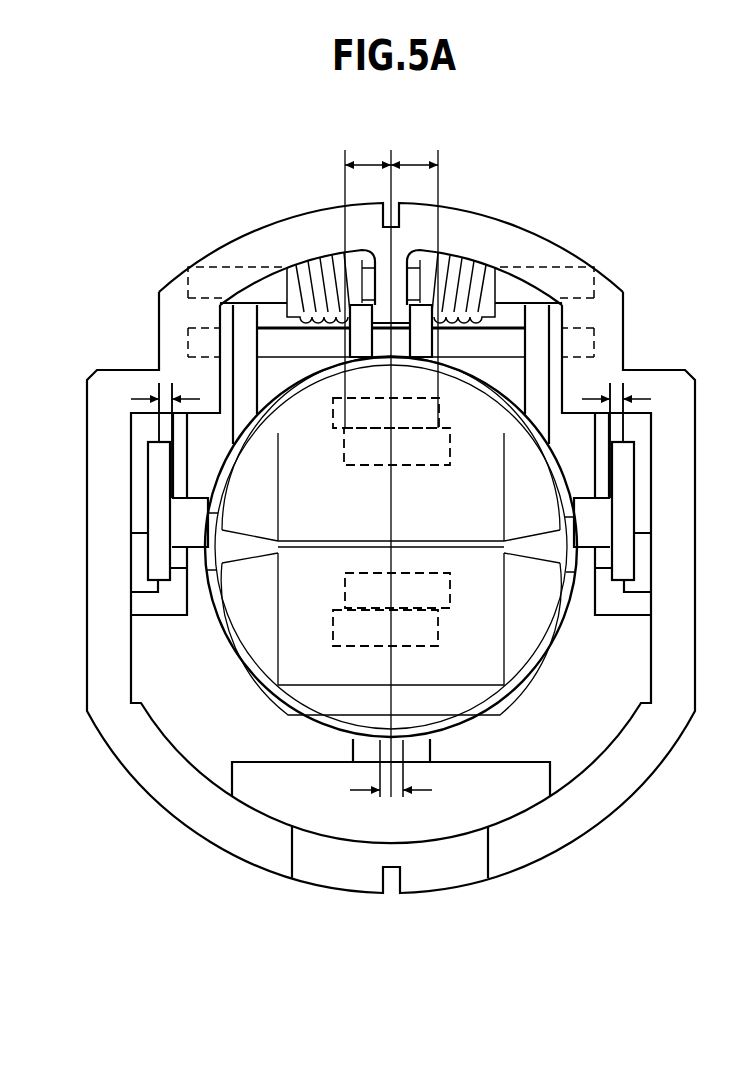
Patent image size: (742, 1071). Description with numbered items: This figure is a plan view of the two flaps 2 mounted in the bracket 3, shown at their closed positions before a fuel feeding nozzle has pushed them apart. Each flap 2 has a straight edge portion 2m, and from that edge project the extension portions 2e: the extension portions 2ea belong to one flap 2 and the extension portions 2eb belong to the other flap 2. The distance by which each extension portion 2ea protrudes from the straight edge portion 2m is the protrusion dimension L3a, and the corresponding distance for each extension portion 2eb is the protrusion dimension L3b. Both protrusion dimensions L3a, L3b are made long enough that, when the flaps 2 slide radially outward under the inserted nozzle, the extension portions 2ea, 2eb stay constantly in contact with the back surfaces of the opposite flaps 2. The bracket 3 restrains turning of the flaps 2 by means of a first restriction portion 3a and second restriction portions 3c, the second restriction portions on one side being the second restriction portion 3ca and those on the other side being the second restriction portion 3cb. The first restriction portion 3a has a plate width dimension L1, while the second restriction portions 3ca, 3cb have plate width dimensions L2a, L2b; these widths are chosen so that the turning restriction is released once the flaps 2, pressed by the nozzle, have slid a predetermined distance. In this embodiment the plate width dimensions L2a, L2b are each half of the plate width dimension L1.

The flap 2 is at (218, 657).
The extension portion 2e is at (396, 541).
The extension portion 2ea is at (333, 413).
The extension portion 2eb is at (445, 656).
The straight edge portion 2m is at (391, 556).
The bracket 3 is at (636, 797).
The first restriction portion 3a is at (430, 744).
The second restriction portion 3c is at (393, 419).
The second restriction portion 3ca is at (163, 432).
The second restriction portion 3cb is at (619, 432).
The plate width dimension L1 is at (392, 800).
The plate width dimension L2a is at (161, 392).
The plate width dimension L2b is at (621, 392).
The protrusion dimension L3a is at (418, 163).
The protrusion dimension L3b is at (368, 163).